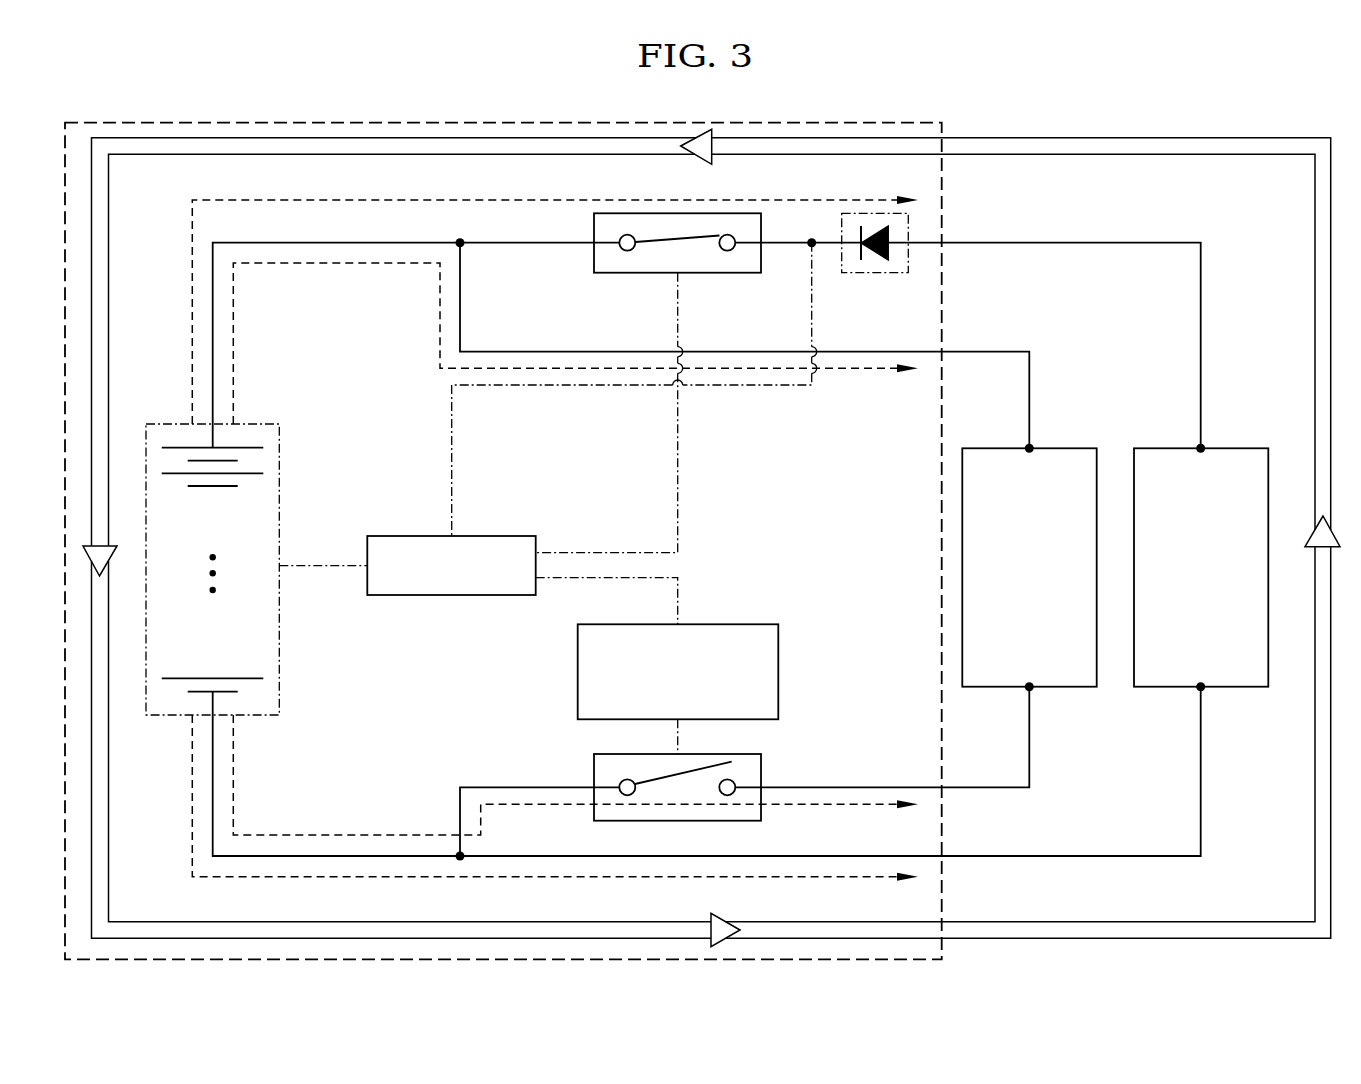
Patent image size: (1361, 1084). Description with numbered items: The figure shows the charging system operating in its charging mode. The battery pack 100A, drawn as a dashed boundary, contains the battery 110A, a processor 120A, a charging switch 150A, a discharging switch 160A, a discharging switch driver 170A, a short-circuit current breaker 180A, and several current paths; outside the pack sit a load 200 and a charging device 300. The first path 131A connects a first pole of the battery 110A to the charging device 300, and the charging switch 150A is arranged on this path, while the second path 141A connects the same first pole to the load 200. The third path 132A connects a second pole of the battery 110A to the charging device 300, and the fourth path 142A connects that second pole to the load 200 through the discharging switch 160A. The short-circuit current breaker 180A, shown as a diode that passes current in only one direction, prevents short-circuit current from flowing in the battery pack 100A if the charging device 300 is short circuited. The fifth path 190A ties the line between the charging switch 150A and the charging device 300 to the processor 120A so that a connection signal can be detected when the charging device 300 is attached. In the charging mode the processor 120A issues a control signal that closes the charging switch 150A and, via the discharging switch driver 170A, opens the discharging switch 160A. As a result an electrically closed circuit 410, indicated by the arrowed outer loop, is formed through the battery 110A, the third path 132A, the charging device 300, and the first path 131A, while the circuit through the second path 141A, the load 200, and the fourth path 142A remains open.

The battery pack 100A is at (497, 122).
The electrically closed circuit 410 is at (1030, 137).
The battery 110A is at (279, 650).
The processor 120A is at (506, 536).
The first path 131A is at (556, 294).
The third path 132A is at (556, 811).
The second path 141A is at (576, 343).
The fourth path 142A is at (576, 775).
The charging switch 150A is at (614, 273).
The discharging switch 160A is at (761, 773).
The discharging switch driver 170A is at (744, 624).
The short-circuit current breaker 180A is at (877, 273).
The fifth path 190A is at (750, 385).
The load 200 is at (1075, 448).
The charging device 300 is at (1252, 448).